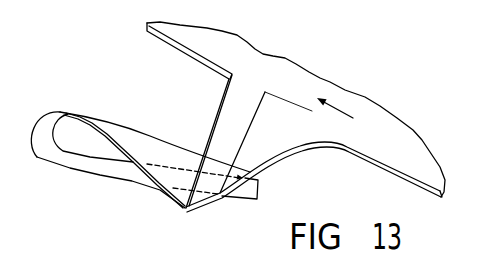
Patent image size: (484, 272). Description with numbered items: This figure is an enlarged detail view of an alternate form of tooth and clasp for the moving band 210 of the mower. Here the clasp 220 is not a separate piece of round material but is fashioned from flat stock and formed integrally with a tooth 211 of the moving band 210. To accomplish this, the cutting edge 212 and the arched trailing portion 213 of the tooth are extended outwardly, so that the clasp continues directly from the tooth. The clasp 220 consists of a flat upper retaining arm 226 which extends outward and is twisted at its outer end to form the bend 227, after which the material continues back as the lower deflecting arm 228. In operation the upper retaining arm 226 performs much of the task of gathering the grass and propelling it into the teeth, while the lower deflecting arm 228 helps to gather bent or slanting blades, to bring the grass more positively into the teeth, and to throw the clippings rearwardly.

The moving band 210 is at (296, 115).
The tooth 211 is at (291, 130).
The cutting edge 212 is at (229, 94).
The arched trailing portion 213 is at (318, 148).
The clasp 220 is at (236, 136).
The flat upper retaining arm 226 is at (166, 118).
The bend 227 is at (48, 159).
The lower deflecting arm 228 is at (133, 180).